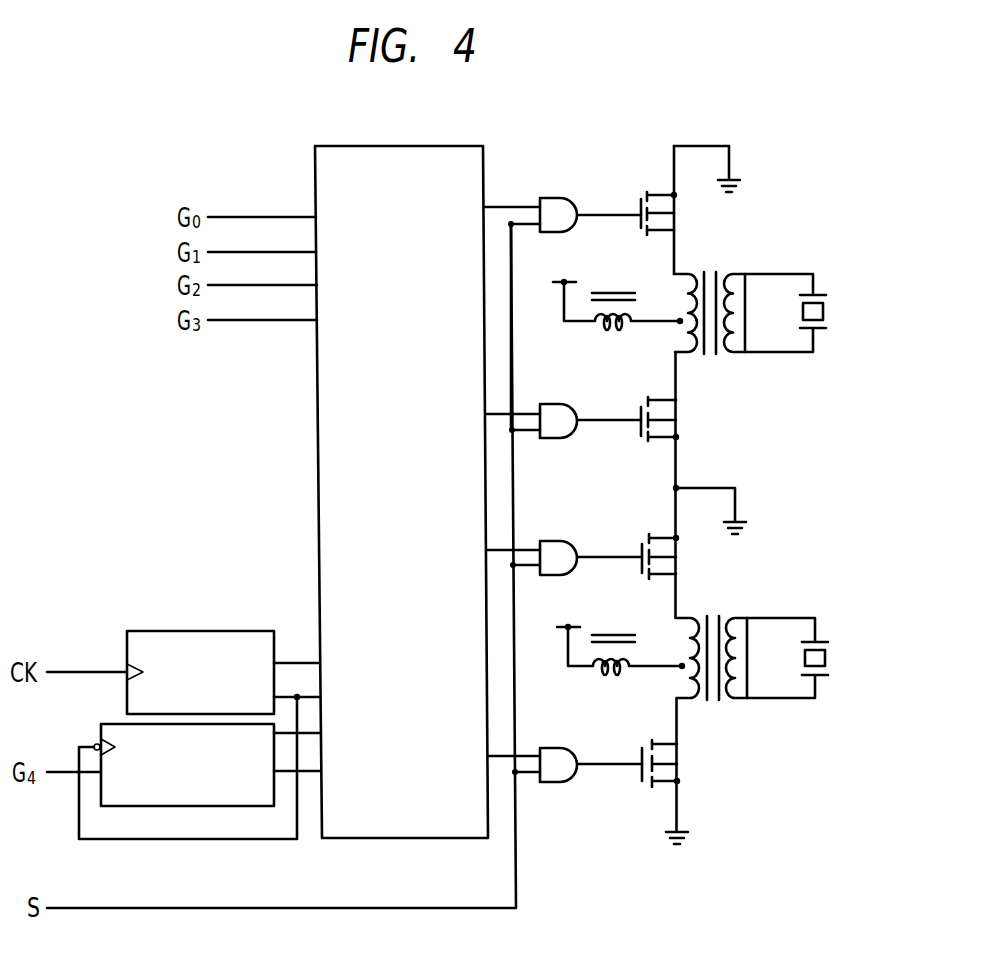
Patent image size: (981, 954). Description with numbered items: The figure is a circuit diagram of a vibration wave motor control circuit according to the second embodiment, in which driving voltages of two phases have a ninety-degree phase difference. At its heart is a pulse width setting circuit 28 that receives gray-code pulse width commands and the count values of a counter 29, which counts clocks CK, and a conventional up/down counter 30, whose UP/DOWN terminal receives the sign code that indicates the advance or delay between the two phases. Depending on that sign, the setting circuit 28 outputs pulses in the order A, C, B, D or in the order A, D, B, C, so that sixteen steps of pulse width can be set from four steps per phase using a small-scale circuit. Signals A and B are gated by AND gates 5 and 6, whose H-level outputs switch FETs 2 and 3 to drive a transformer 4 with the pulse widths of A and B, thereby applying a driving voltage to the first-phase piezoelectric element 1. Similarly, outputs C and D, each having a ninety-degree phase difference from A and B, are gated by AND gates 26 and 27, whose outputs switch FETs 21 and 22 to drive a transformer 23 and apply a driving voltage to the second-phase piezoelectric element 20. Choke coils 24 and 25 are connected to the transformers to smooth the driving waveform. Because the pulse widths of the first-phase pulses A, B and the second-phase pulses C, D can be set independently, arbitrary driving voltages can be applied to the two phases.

The piezoelectric element 1 is at (814, 292).
The FET 2 is at (645, 196).
The FET 3 is at (644, 404).
The transformer 4 is at (710, 280).
The AND gate 5 is at (557, 197).
The AND gate 6 is at (556, 403).
The piezoelectric element 20 is at (818, 640).
The FET 21 is at (645, 546).
The FET 22 is at (646, 747).
The transformer 23 is at (712, 624).
The choke coil 24 is at (608, 291).
The choke coil 25 is at (609, 633).
The AND gate 26 is at (556, 541).
The AND gate 27 is at (556, 748).
The pulse width setting circuit 28 is at (393, 145).
The counter 29 is at (195, 630).
The up/down counter 30 is at (188, 807).